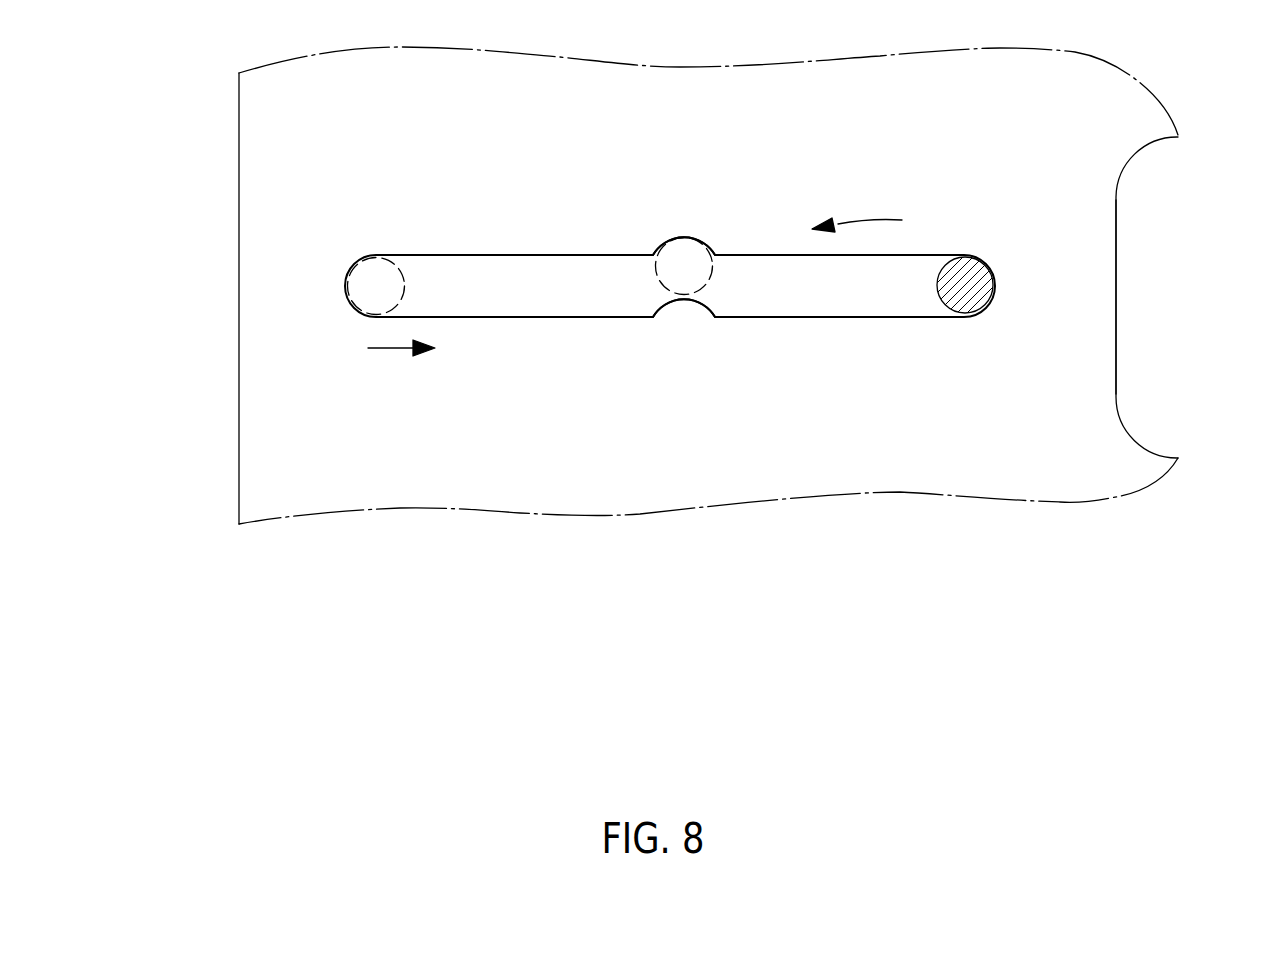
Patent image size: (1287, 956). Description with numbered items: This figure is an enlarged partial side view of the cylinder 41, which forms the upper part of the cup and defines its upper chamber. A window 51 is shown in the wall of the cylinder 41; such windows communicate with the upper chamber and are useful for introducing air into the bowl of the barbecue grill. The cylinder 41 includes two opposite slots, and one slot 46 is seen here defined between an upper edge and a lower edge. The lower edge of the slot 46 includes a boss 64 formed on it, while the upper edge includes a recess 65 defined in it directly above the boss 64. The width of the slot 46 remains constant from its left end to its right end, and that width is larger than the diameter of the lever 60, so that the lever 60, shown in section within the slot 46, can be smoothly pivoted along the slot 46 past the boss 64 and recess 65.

The cylinder 41 is at (270, 247).
The window 51 is at (1117, 283).
The slot 46 is at (812, 308).
The recess 65 is at (685, 242).
The boss 64 is at (685, 320).
The lever 60 is at (963, 292).